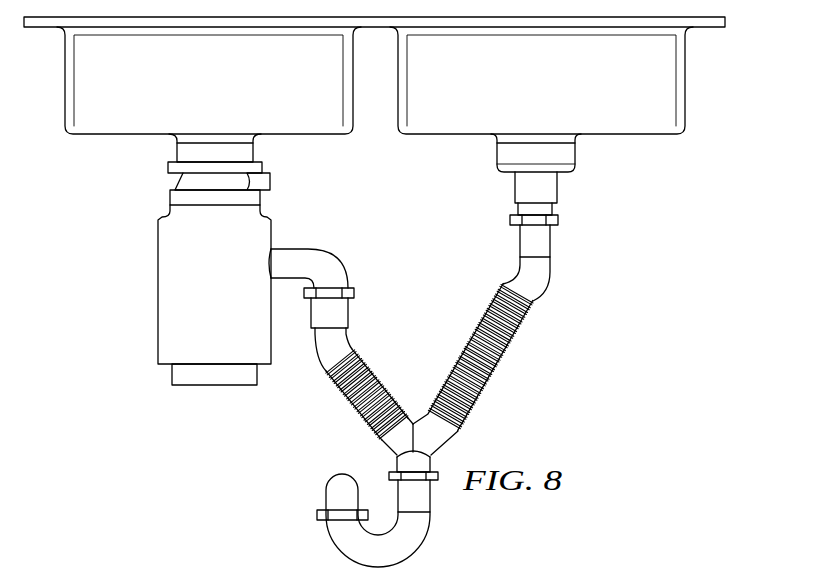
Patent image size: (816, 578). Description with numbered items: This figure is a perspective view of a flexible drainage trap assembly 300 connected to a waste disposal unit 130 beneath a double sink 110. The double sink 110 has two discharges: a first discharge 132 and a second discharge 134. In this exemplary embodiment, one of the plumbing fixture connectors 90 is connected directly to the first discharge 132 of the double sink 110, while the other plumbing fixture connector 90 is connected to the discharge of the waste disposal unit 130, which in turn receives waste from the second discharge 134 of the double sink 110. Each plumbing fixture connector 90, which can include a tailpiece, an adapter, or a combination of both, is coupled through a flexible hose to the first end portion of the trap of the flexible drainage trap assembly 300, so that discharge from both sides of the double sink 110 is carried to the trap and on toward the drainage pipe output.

The double sink 110 is at (685, 83).
The waste disposal unit 130 is at (158, 294).
The first discharge 132 is at (574, 150).
The second discharge 134 is at (177, 146).
The plumbing fixture connector 90 is at (327, 362).
The flexible drainage trap assembly 300 is at (446, 369).